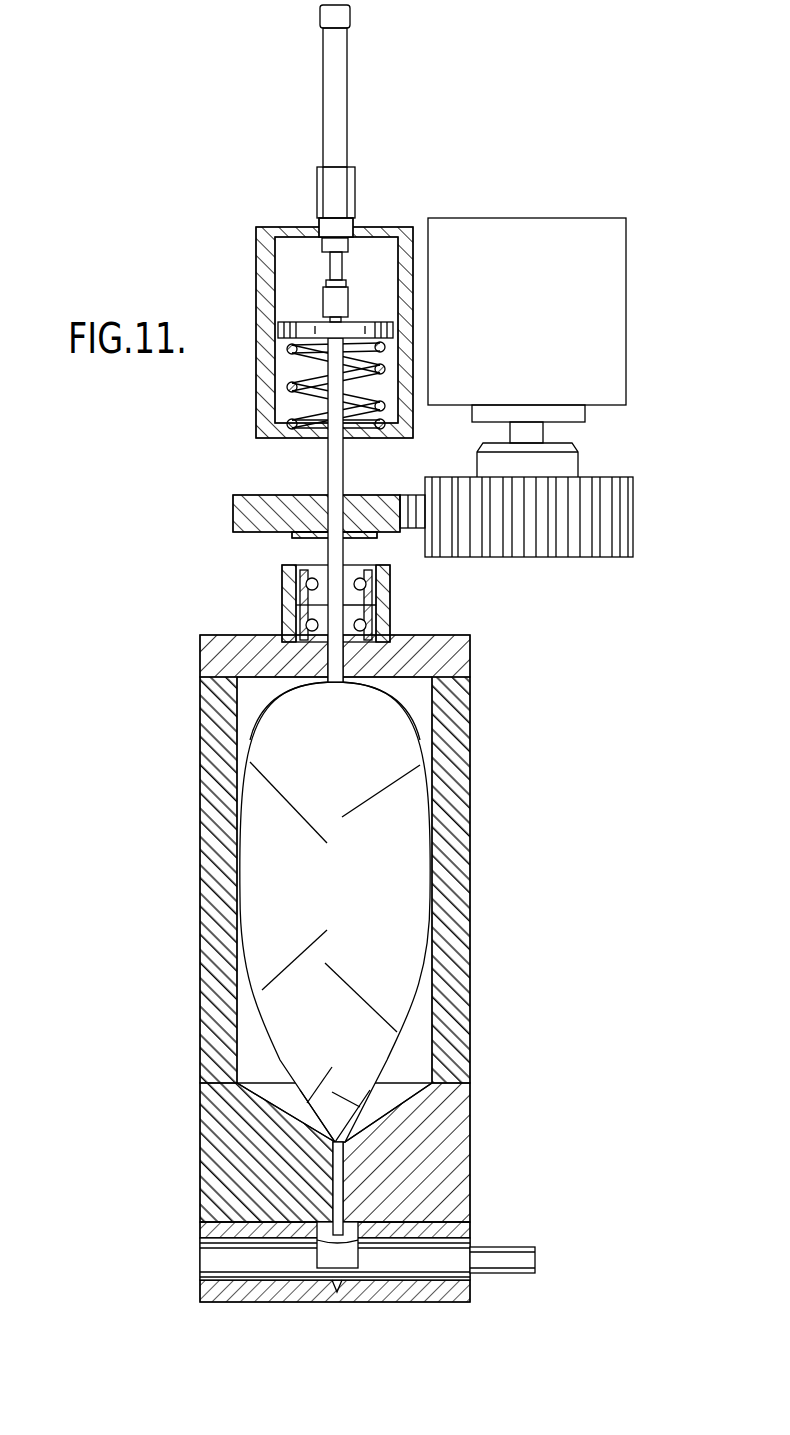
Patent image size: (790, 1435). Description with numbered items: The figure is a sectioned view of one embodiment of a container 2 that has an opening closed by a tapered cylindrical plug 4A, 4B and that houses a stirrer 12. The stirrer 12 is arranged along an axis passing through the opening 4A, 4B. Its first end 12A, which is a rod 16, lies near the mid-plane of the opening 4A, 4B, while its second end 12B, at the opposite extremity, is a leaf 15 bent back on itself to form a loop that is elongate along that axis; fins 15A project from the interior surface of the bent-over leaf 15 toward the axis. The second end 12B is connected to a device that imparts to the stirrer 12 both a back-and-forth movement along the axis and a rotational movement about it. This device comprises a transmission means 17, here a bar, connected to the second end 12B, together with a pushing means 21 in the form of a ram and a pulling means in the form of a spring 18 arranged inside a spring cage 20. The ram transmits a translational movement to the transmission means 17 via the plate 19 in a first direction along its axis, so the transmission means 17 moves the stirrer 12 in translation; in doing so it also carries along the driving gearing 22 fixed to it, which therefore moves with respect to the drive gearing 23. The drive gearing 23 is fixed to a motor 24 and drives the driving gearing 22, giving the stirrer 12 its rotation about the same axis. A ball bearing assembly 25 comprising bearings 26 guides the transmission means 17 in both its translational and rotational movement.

The container 2 is at (450, 882).
The tapered cylindrical plug 4A is at (338, 1290).
The tapered cylindrical plug 4B is at (333, 1260).
The stirrer 12 is at (415, 985).
The first end of the stirrer 12A is at (335, 1143).
The second end of the stirrer 12B is at (297, 679).
The leaf 15 is at (240, 960).
The fins 15A is at (300, 950).
The rod 16 is at (333, 1195).
The transmission means 17 is at (335, 463).
The spring 18 is at (290, 422).
The plate 19 is at (302, 333).
The spring cage 20 is at (263, 253).
The pushing means 21 is at (337, 302).
The driving gearing 22 is at (263, 512).
The drive gearing 23 is at (580, 522).
The motor 24 is at (561, 243).
The ball bearing assembly 25 is at (383, 587).
The bearings 26 is at (306, 584).